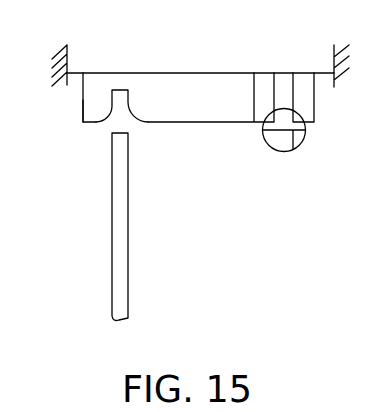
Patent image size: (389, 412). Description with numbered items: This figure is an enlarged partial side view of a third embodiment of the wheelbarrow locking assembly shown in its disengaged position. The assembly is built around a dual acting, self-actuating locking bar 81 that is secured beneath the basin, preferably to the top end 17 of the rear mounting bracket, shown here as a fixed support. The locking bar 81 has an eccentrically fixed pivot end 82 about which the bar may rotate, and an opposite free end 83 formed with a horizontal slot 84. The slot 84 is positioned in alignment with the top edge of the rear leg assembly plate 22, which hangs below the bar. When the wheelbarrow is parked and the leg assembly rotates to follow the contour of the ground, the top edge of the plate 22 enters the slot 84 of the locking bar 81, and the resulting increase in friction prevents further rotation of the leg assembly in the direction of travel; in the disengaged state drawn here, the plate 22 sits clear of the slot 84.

The top end of the rear mounting bracket 17 is at (228, 60).
The locking bar 81 is at (173, 92).
The pivot end 82 is at (288, 149).
The free end 83 is at (90, 108).
The horizontal slot 84 is at (122, 115).
The rear leg assembly plate 22 is at (118, 165).